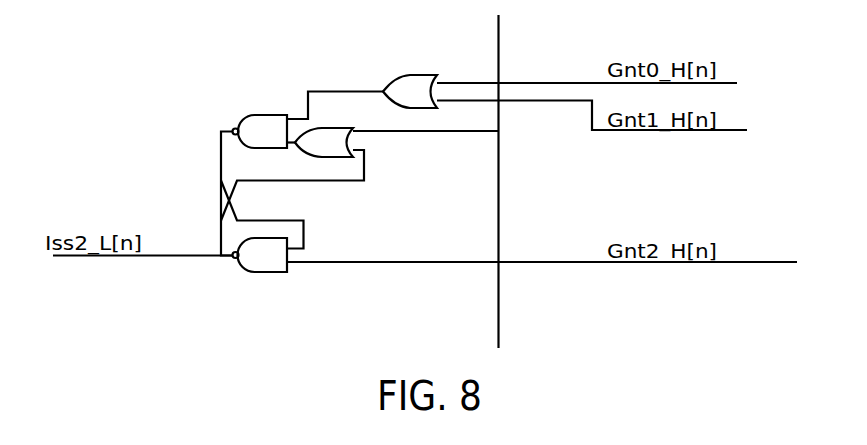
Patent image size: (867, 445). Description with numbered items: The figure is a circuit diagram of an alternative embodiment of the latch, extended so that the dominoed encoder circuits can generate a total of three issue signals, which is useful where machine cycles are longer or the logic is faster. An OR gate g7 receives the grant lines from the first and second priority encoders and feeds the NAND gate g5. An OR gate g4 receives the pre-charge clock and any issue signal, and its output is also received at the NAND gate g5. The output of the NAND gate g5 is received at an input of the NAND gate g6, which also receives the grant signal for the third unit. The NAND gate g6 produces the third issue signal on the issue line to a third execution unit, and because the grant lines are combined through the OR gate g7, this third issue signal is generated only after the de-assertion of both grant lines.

The OR gate g4 is at (354, 143).
The NAND gate g5 is at (263, 113).
The NAND gate g6 is at (263, 274).
The OR gate g7 is at (426, 75).